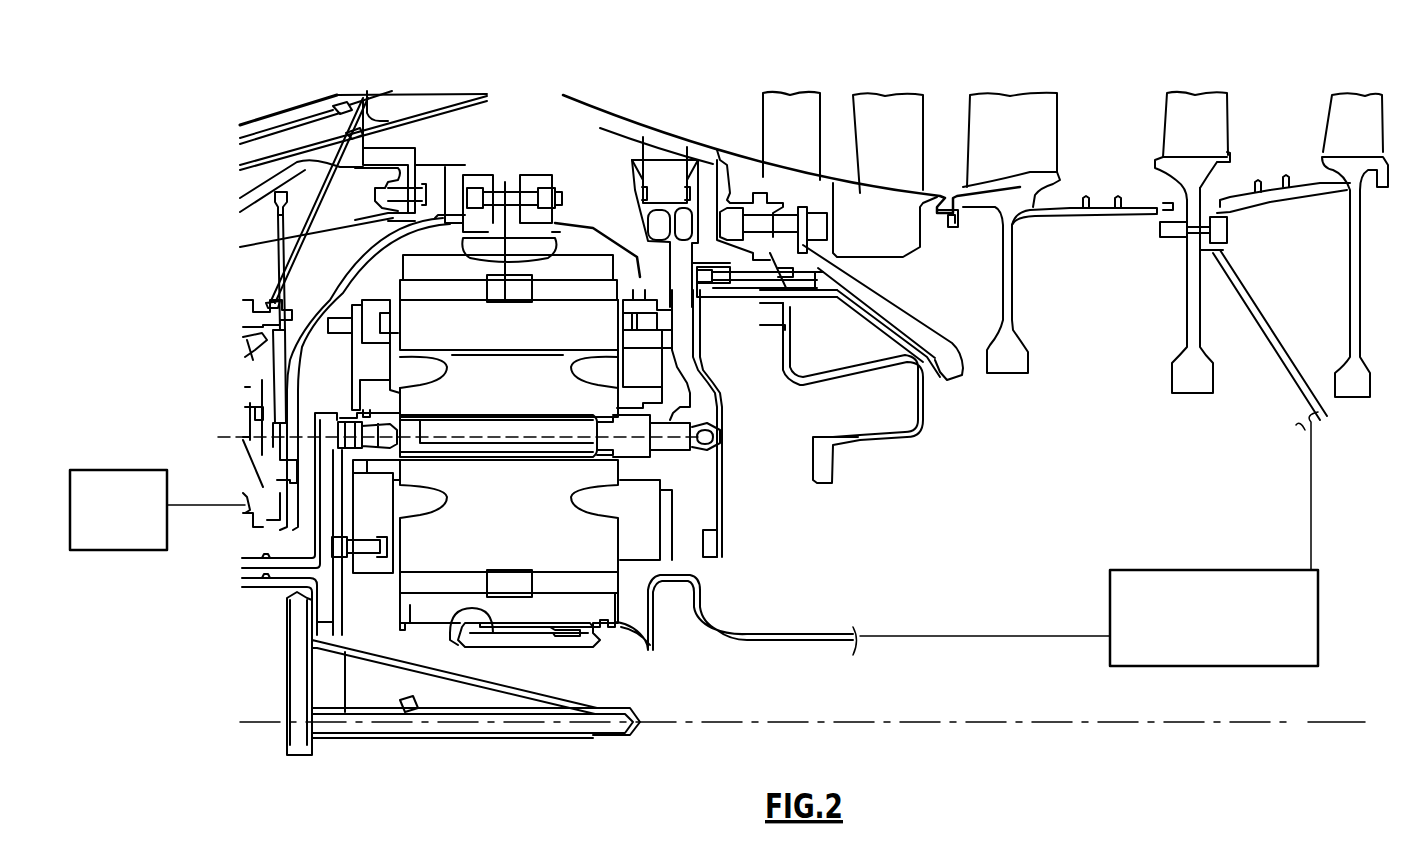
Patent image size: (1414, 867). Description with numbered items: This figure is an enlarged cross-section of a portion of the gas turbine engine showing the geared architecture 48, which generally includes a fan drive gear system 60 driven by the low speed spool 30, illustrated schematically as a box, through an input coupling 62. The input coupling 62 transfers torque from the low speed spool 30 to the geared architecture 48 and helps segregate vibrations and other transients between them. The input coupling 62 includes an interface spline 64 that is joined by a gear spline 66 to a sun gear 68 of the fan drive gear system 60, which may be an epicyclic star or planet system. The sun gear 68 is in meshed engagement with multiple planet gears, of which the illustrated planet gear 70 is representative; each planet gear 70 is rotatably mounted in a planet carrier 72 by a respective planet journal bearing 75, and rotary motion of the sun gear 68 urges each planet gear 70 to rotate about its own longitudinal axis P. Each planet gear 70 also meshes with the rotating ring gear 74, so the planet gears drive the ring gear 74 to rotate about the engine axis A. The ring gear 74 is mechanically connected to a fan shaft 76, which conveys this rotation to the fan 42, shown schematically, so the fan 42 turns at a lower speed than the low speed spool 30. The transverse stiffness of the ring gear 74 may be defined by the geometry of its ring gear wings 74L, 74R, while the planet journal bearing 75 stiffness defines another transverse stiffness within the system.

The low speed spool 30 is at (1214, 539).
The fan 42 is at (157, 510).
The geared architecture 48 is at (541, 137).
The fan drive gear system 60 is at (385, 286).
The input coupling 62 is at (777, 637).
The interface spline 64 is at (527, 628).
The gear spline 66 is at (460, 614).
The sun gear 68 is at (417, 606).
The planet gear 70 is at (509, 543).
The planet carrier 72 is at (647, 370).
The ring gear 74 is at (567, 285).
The ring gear wing 74L is at (460, 252).
The ring gear wing 74R is at (563, 248).
The planet journal bearing 75 is at (407, 473).
The fan shaft 76 is at (297, 330).
The longitudinal axis P is at (525, 437).
The engine axis A is at (1293, 722).